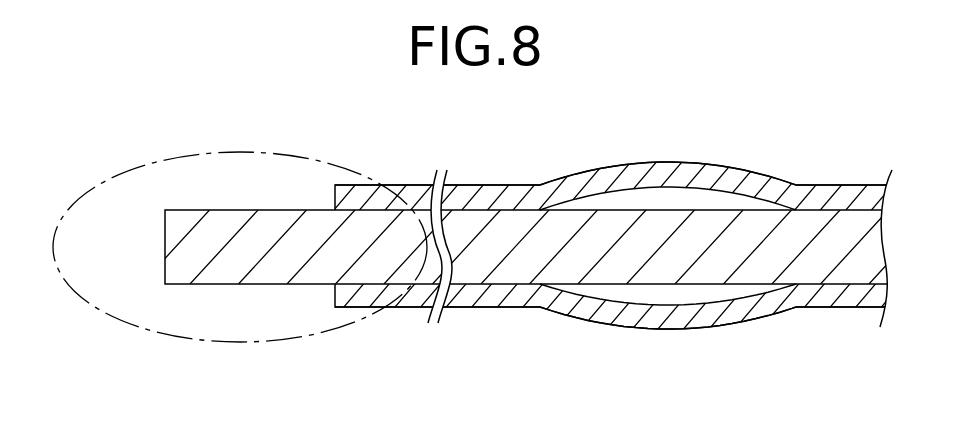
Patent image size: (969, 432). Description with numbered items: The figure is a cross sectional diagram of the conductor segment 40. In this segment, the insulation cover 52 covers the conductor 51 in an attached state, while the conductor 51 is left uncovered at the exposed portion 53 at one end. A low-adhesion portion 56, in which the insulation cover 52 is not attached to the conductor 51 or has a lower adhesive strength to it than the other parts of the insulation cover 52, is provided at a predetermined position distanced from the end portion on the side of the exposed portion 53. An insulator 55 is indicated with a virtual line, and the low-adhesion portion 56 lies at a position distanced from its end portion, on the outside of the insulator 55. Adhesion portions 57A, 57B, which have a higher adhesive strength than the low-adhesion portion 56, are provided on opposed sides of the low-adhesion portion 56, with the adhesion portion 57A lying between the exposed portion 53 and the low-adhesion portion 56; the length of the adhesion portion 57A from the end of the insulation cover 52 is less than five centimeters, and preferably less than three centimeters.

The conductor segment 40 is at (831, 129).
The conductor 51 is at (493, 208).
The insulation cover 52 is at (525, 185).
The exposed portion 53 is at (254, 210).
The insulator 55 is at (175, 336).
The low-adhesion portion 56 is at (780, 333).
The adhesion portion 57A is at (543, 333).
The adhesion portion 57B is at (890, 333).